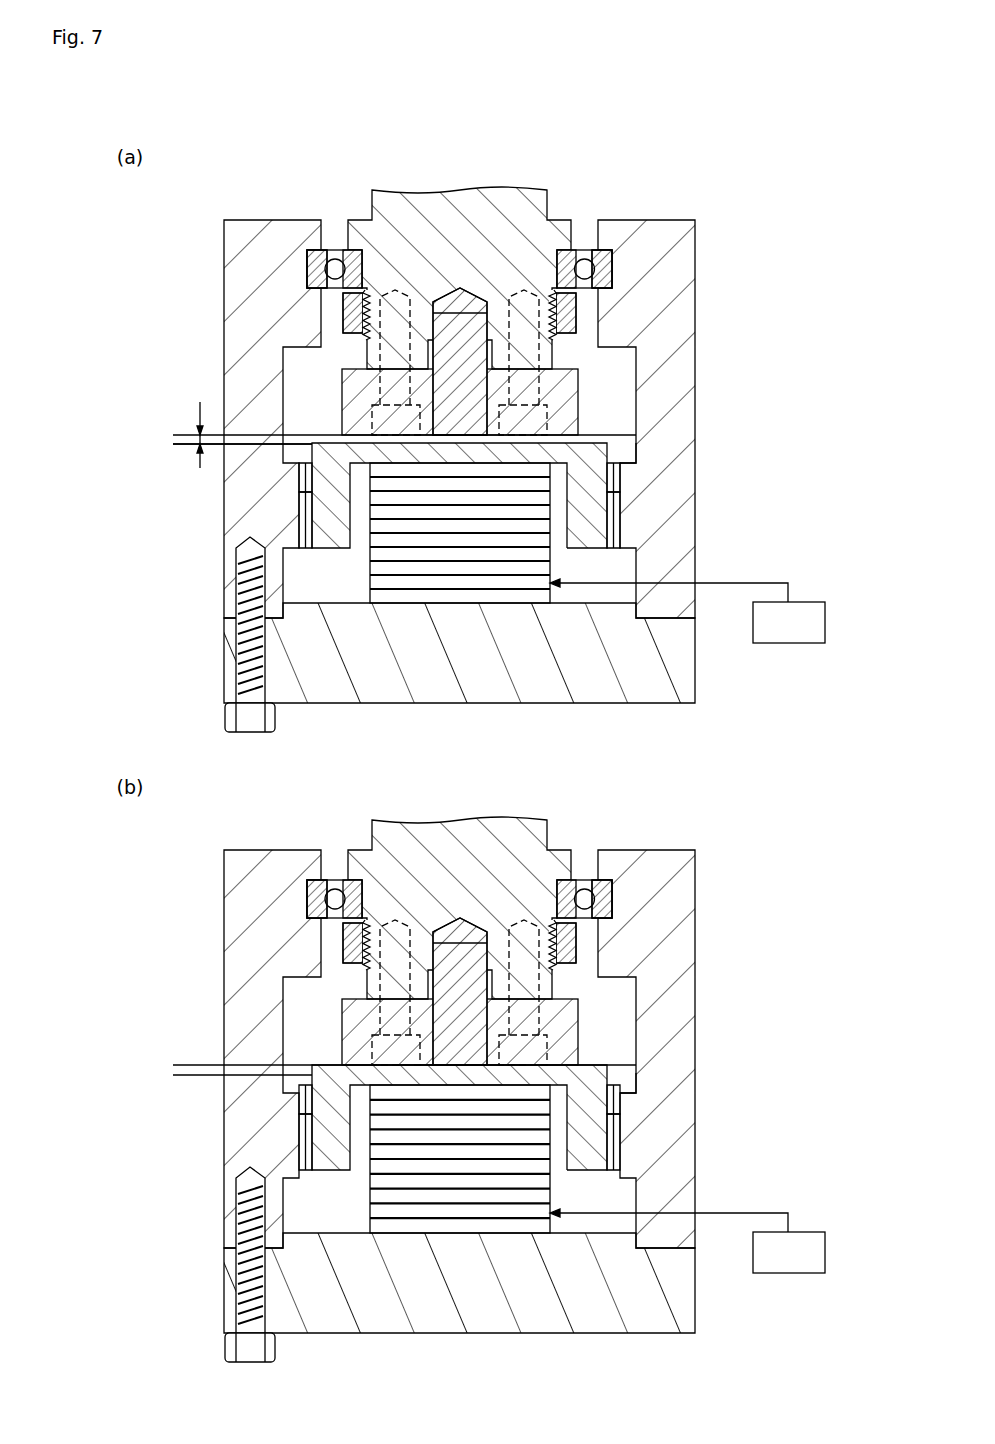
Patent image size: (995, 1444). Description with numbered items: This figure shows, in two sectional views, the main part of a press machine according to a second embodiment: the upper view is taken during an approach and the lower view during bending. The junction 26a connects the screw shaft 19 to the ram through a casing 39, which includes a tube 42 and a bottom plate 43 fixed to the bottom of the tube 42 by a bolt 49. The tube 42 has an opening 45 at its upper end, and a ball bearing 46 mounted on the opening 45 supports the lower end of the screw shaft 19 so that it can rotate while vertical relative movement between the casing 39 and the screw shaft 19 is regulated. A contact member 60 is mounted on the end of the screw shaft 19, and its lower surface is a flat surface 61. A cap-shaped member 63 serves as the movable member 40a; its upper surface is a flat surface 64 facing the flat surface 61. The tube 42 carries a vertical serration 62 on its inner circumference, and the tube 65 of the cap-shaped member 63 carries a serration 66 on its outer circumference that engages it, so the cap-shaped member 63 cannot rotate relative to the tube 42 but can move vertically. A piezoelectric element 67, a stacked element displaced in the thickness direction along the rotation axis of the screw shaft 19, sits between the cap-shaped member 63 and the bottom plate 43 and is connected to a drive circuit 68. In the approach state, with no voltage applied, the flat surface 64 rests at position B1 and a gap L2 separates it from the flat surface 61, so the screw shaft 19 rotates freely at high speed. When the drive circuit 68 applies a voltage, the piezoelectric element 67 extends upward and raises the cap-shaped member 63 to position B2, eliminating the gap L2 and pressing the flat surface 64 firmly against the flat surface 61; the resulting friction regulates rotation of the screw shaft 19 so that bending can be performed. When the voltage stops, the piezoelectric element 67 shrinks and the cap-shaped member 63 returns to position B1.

The screw shaft 19 is at (540, 207).
The junction 26a is at (684, 210).
The casing 39 is at (214, 281).
The movable member 40a is at (619, 452).
The tube 42 is at (232, 330).
The bottom plate 43 is at (680, 667).
The opening 45 is at (322, 232).
The ball bearing 46 is at (317, 250).
The bolt 49 is at (226, 714).
The contact member 60 is at (350, 395).
The flat surface 61 is at (460, 446).
The vertical serration 62 is at (302, 480).
The cap-shaped member 63 is at (530, 453).
The flat surface 64 is at (493, 438).
The tube 65 is at (590, 520).
The serration 66 is at (303, 527).
The piezoelectric element 67 is at (370, 572).
The drive circuit 68 is at (807, 602).
The gap L2 is at (198, 403).
The position B1 is at (193, 445).
The position B2 is at (193, 1064).